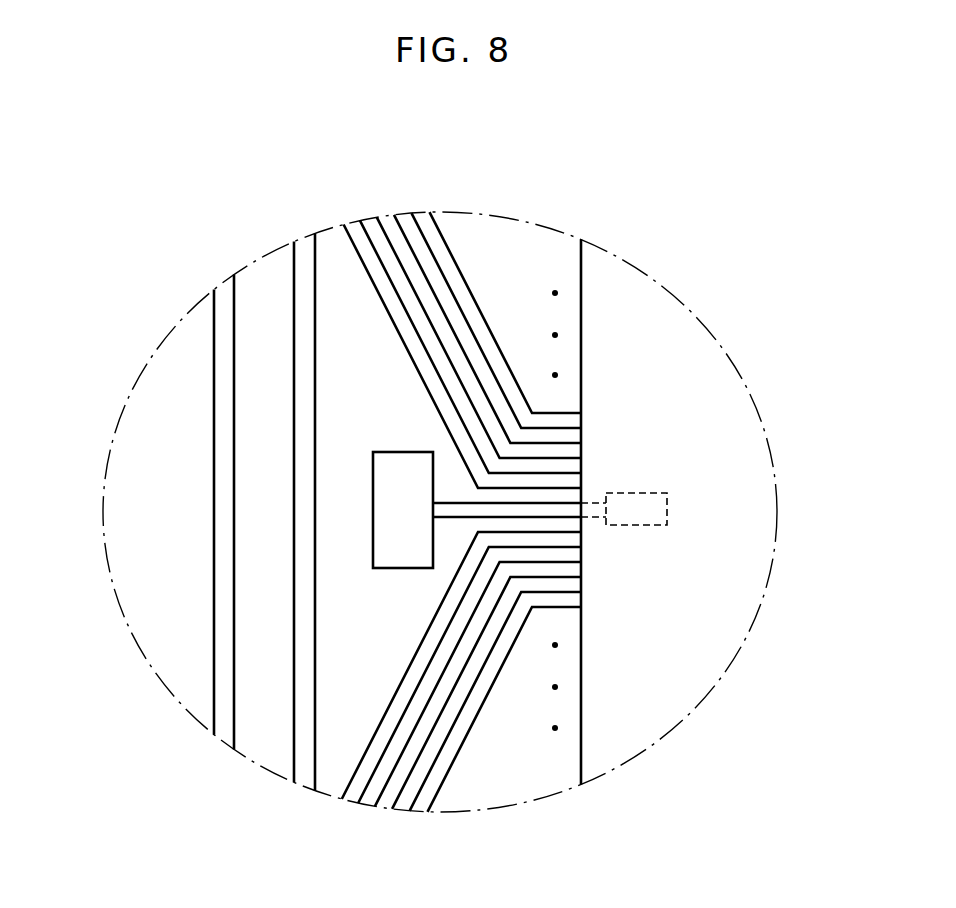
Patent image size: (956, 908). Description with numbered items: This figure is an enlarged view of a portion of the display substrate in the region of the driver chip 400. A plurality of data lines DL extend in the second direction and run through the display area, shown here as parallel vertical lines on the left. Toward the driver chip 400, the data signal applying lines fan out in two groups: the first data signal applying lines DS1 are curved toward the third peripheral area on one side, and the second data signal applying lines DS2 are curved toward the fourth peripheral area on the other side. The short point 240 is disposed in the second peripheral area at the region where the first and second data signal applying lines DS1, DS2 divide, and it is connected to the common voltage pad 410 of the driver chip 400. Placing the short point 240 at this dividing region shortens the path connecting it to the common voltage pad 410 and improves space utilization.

The driver chip 400 is at (710, 603).
The common voltage pad 410 is at (667, 508).
The short point 240 is at (388, 510).
The data lines DL is at (302, 315).
The first data signal applying lines DS1 is at (458, 250).
The second data signal applying lines DS2 is at (458, 770).